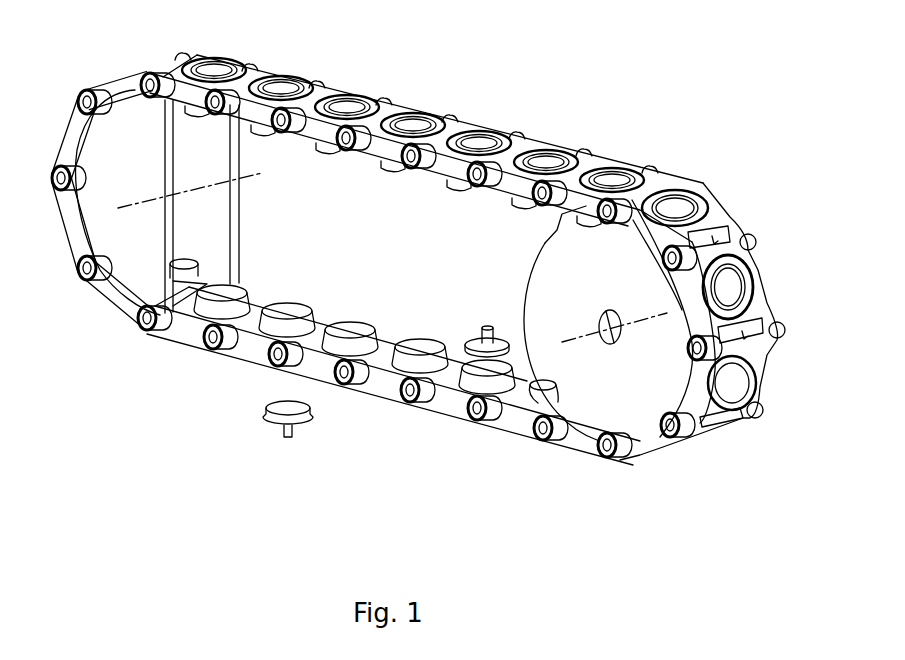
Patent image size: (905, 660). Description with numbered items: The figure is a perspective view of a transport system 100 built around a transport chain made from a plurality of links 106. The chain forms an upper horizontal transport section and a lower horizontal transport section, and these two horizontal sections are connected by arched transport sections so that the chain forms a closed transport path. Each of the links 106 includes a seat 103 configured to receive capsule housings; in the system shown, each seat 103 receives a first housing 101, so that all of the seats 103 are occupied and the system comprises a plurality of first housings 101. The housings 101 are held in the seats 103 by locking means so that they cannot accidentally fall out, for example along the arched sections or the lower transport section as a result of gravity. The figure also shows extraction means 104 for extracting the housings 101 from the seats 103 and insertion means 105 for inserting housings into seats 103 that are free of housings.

The transport system 100 is at (480, 55).
The first housing 101 is at (358, 100).
The seat 103 is at (390, 110).
The extraction means 104 is at (475, 333).
The insertion means 105 is at (298, 401).
The link 106 is at (248, 62).